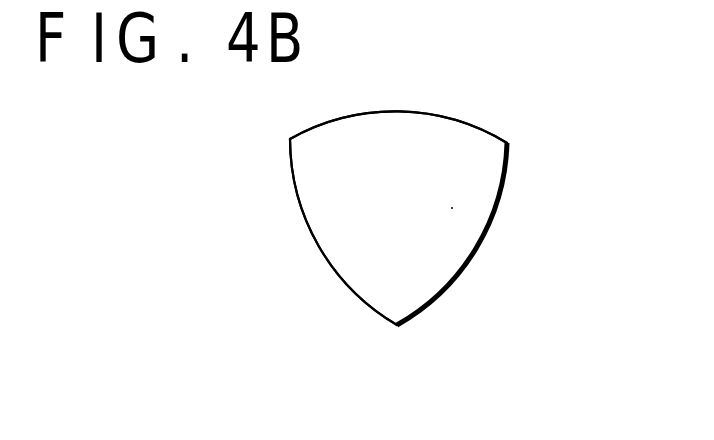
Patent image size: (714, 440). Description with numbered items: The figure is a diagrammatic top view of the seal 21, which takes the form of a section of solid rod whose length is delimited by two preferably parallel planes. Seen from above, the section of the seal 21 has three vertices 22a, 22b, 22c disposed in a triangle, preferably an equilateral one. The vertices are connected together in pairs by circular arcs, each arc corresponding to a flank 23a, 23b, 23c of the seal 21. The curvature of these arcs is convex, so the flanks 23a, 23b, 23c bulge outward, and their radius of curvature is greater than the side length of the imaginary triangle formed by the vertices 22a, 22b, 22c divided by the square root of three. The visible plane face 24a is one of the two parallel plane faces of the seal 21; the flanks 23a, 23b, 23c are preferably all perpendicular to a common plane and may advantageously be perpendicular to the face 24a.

The seal 21 is at (340, 302).
The vertex 22a is at (507, 143).
The vertex 22b is at (290, 139).
The vertex 22c is at (397, 325).
The flank 23a is at (313, 247).
The flank 23b is at (468, 268).
The flank 23c is at (413, 112).
The plane face 24a is at (452, 208).